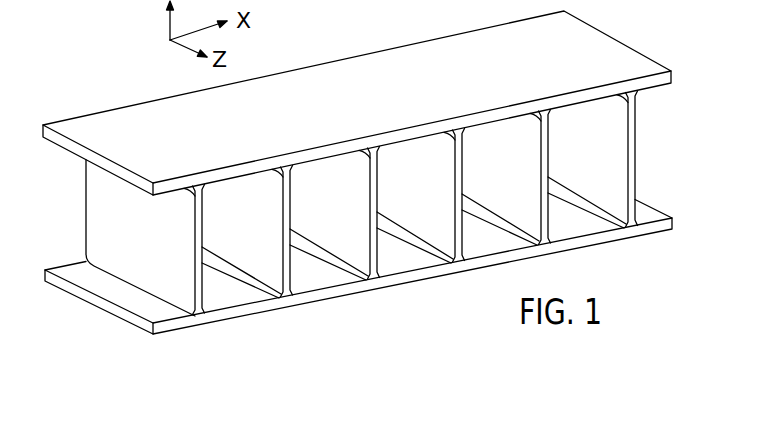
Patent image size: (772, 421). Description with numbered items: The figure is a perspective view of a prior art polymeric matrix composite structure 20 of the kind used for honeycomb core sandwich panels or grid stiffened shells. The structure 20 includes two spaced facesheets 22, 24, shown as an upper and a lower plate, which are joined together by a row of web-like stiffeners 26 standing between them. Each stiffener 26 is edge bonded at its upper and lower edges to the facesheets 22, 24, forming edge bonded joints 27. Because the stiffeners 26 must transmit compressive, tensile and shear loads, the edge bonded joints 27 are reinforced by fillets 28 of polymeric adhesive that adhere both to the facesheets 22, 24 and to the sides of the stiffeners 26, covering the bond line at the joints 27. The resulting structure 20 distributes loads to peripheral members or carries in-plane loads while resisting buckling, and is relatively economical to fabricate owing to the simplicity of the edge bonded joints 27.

The polymeric matrix composite structure 20 is at (110, 87).
The facesheet 22 is at (601, 55).
The facesheet 24 is at (160, 317).
The web-like stiffener 26 is at (115, 218).
The edge bonded joint 27 is at (368, 282).
The fillet 28 is at (150, 297).